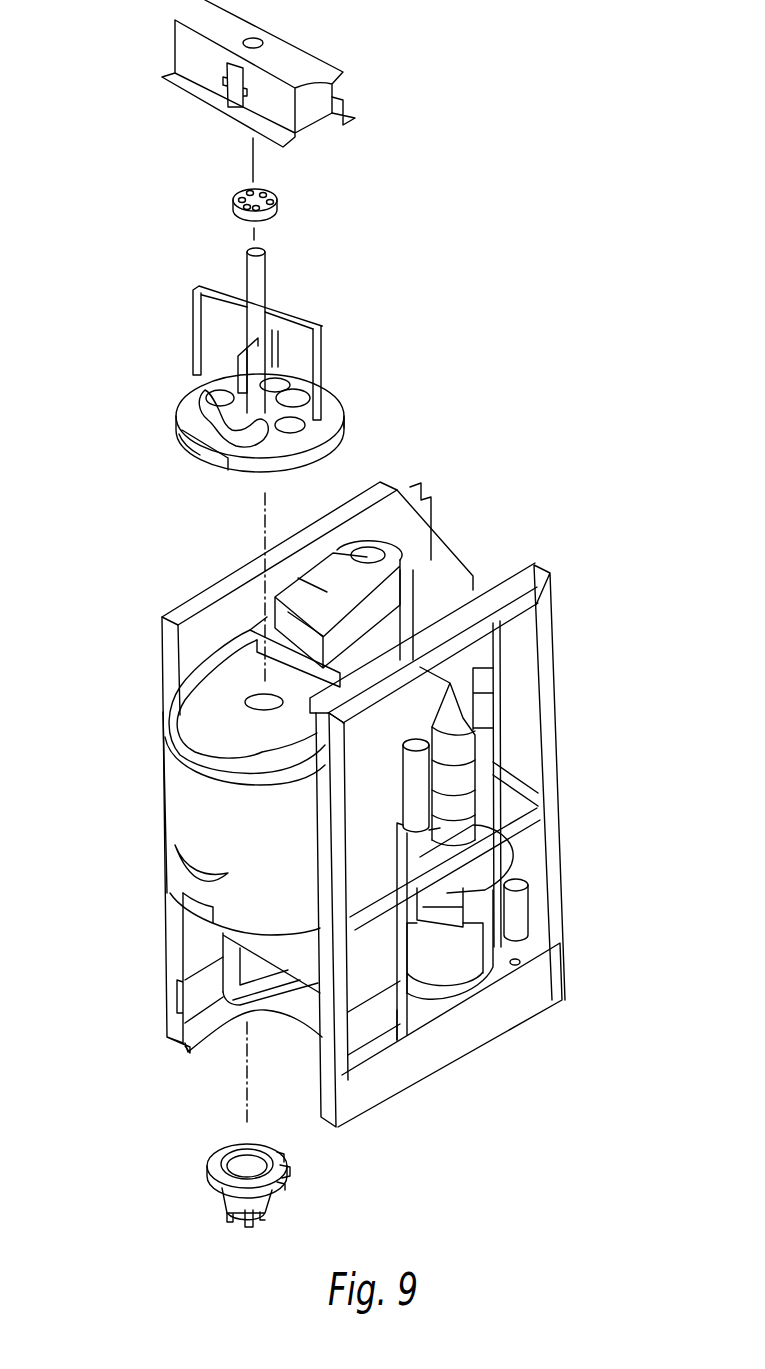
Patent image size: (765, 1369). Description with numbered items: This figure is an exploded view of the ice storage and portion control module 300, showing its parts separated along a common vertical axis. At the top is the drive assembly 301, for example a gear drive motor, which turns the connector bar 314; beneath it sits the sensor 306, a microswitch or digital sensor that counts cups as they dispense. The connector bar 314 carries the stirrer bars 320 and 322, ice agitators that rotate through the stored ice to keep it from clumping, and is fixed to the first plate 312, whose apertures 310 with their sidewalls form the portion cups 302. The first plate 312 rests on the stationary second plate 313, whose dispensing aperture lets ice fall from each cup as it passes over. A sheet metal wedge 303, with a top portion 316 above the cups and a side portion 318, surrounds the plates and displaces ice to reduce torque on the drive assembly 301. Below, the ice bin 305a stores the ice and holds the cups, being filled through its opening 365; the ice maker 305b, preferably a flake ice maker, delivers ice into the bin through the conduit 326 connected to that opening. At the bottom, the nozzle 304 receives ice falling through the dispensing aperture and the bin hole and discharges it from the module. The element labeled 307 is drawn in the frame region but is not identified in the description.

The ice storage and portion control module 300 is at (345, 798).
The drive assembly 301 is at (173, 17).
The portion cups 302 is at (268, 420).
The wedge 303 is at (196, 455).
The nozzle 304 is at (207, 1168).
The ice bin 305a is at (186, 841).
The ice maker 305b is at (462, 778).
The sensor 306 is at (235, 203).
The base 307 is at (363, 1098).
The apertures 310 is at (291, 424).
The first plate 312 is at (326, 378).
The second plate 313 is at (346, 432).
The connector bar 314 is at (265, 280).
The top portion 316 is at (205, 420).
The side portion 318 is at (220, 460).
The stirrer bar 320 is at (284, 329).
The stirrer bar 322 is at (243, 340).
The conduit 326 is at (328, 592).
The opening 365 is at (223, 713).